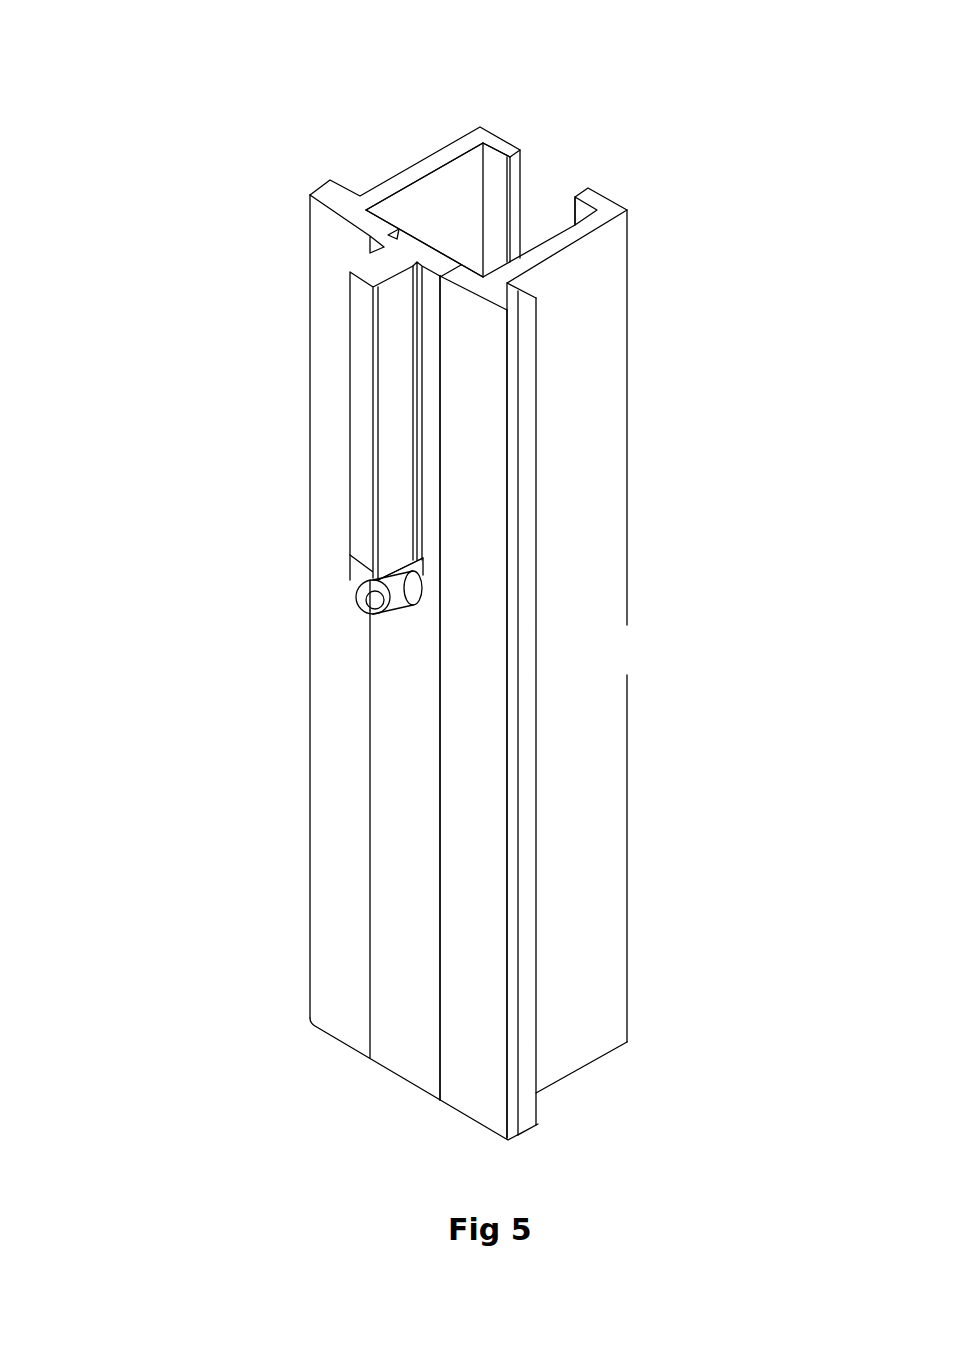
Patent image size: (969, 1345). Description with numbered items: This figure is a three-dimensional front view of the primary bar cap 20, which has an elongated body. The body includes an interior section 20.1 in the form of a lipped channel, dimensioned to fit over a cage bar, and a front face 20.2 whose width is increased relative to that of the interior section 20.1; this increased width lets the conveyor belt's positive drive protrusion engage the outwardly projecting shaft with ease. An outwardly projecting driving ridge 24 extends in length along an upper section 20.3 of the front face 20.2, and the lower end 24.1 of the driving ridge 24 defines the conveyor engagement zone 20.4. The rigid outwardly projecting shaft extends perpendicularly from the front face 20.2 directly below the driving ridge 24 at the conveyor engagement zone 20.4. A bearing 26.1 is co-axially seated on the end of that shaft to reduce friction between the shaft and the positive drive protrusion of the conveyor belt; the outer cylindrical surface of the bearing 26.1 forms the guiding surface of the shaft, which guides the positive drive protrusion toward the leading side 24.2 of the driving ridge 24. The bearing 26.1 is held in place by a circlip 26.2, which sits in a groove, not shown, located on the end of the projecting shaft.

The primary bar cap 20 is at (449, 571).
The interior section 20.1 is at (482, 190).
The front face 20.2 is at (465, 723).
The upper section 20.3 is at (328, 291).
The conveyor engagement zone 20.4 is at (340, 583).
The driving ridge 24 is at (357, 432).
The lower end of the driving ridge 24.1 is at (390, 568).
The leading side of the driving ridge 24.2 is at (400, 486).
The bearing 26.1 is at (398, 606).
The circlip 26.2 is at (360, 599).